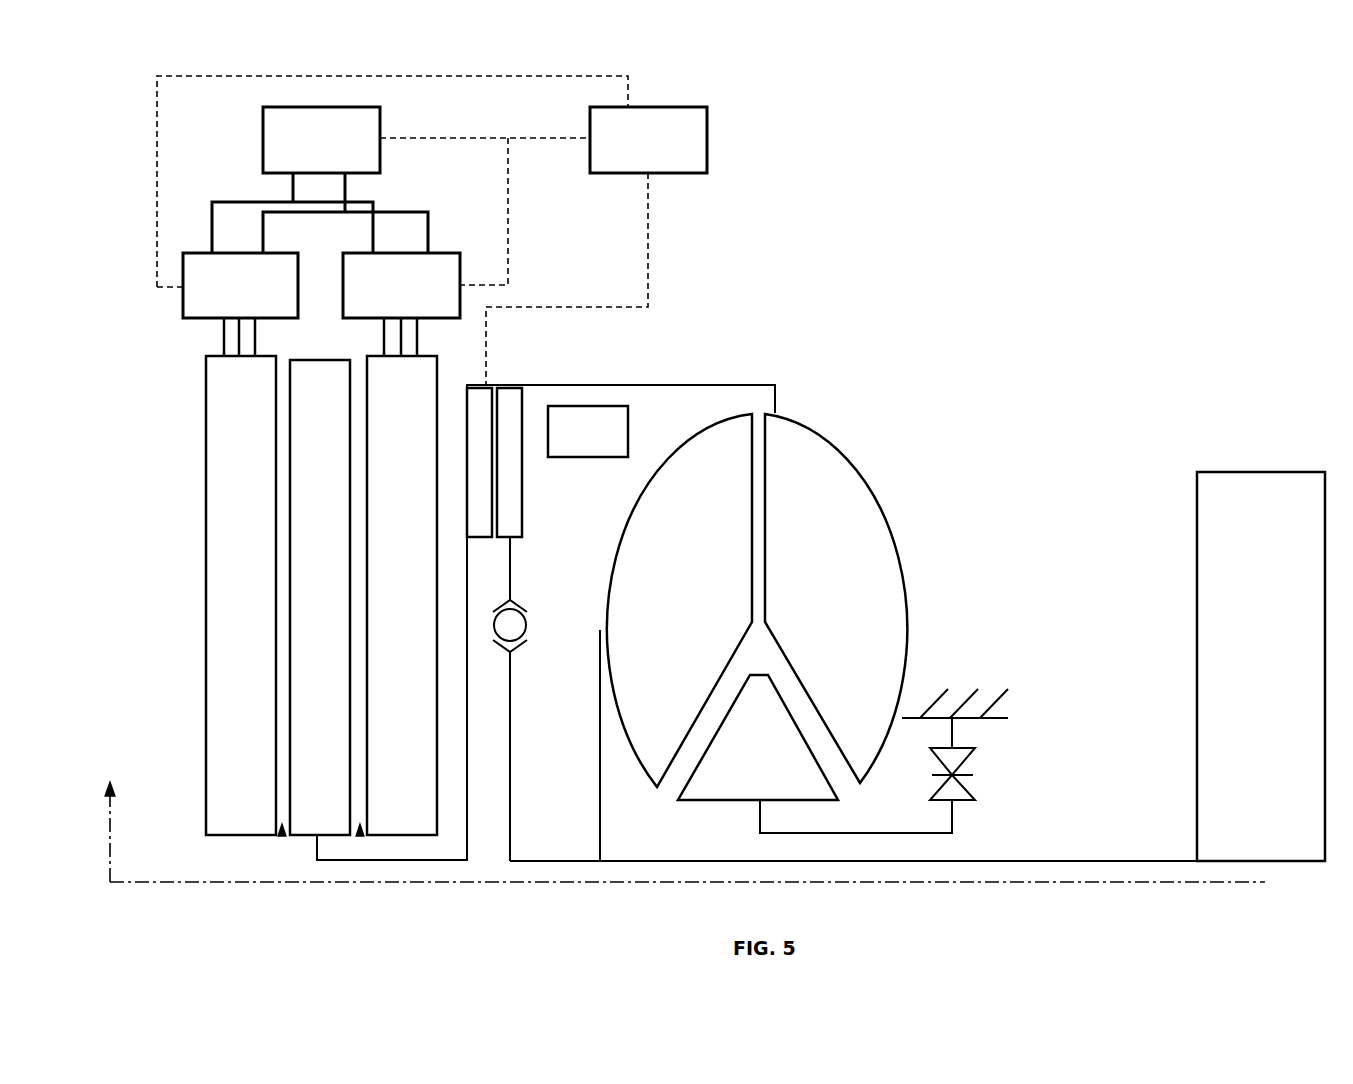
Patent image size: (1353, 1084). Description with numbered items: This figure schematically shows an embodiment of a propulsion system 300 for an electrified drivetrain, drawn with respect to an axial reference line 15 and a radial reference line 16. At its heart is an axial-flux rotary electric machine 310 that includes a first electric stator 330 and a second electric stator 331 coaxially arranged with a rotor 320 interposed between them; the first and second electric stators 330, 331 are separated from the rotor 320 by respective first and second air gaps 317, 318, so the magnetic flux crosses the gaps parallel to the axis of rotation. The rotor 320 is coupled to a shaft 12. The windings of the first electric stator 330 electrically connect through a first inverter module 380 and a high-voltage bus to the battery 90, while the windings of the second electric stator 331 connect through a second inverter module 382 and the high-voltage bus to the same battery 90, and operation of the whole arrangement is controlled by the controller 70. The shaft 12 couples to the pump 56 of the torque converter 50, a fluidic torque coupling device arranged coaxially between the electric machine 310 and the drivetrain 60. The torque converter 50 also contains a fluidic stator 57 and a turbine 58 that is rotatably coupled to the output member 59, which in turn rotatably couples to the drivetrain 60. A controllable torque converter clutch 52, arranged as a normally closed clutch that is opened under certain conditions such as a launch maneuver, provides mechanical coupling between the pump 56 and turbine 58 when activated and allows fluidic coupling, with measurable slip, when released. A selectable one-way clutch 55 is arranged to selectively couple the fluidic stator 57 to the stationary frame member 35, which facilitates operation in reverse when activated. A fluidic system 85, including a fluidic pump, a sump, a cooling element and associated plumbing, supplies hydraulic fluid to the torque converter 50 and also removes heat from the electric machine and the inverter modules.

The propulsion system 300 is at (918, 120).
The axial-flux rotary electric machine 310 is at (163, 370).
The first electric stator 330 is at (245, 836).
The rotor 320 is at (328, 836).
The second electric stator 331 is at (423, 836).
The first air gap 317 is at (282, 830).
The second air gap 318 is at (360, 830).
The first inverter module 380 is at (222, 296).
The second inverter module 382 is at (383, 296).
The battery 90 is at (309, 151).
The controller 70 is at (636, 151).
The shaft 12 is at (717, 385).
The torque converter clutch 52 is at (522, 516).
The fluidic system 85 is at (576, 442).
The torque converter 50 is at (916, 482).
The turbine 58 is at (666, 563).
The pump 56 is at (826, 563).
The fluidic stator 57 is at (748, 763).
The stationary frame member 35 is at (1003, 712).
The selectable one-way clutch 55 is at (970, 771).
The output member 59 is at (1043, 860).
The drivetrain 60 is at (1248, 676).
The axial reference line 15 is at (1153, 884).
The radial reference line 16 is at (110, 838).